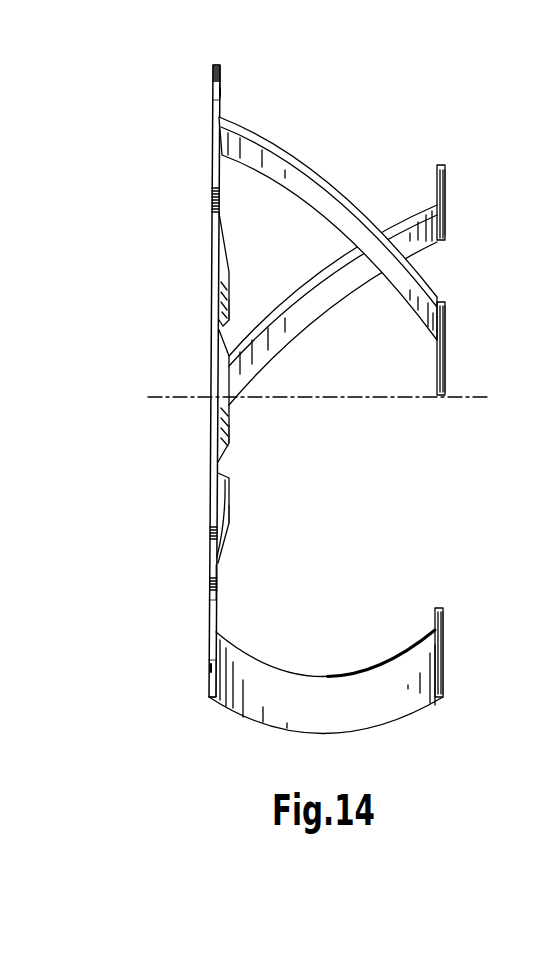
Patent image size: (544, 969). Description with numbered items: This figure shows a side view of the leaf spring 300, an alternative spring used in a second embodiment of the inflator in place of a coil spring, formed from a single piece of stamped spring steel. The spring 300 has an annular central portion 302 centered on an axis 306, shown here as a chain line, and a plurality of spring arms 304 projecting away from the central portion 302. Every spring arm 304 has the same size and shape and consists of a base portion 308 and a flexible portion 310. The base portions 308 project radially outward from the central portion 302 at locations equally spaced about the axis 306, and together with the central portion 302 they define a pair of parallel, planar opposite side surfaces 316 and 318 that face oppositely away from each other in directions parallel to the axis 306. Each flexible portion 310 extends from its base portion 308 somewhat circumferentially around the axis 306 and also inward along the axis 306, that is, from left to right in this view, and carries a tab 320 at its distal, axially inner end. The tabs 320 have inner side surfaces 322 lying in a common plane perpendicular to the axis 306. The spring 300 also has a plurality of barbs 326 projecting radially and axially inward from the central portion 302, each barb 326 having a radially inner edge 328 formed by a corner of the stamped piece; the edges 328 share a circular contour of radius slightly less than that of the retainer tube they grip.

The leaf spring 300 is at (142, 73).
The central portion 302 is at (198, 273).
The spring arms 304 is at (200, 104).
The axis 306 is at (187, 396).
The base portion 308 is at (220, 92).
The flexible portion 310 is at (318, 176).
The side surface 316 is at (208, 624).
The side surface 318 is at (217, 600).
The tab 320 is at (437, 165).
The inner side surface 322 is at (446, 186).
The barb 326 is at (225, 258).
The radially inner edge 328 is at (232, 304).